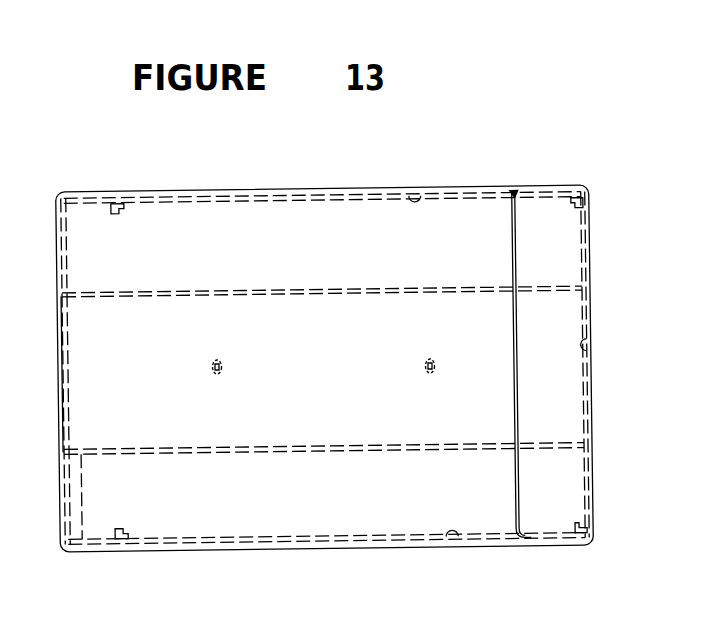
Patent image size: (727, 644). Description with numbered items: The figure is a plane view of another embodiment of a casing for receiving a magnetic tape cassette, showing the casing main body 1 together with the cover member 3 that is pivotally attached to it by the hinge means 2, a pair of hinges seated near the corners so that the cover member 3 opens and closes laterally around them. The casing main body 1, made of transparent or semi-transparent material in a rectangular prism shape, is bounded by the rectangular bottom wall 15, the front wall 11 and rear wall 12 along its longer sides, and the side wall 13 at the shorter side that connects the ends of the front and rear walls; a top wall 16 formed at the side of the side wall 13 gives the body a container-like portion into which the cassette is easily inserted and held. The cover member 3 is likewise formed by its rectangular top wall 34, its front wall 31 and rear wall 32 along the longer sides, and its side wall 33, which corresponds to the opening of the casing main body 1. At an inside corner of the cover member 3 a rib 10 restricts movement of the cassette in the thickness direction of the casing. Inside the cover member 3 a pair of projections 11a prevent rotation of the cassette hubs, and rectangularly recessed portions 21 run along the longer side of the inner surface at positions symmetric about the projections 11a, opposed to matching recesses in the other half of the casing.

The casing main body 1 is at (356, 368).
The hinge means 2 is at (582, 214).
The cover member 3 is at (381, 150).
The rib 10 is at (122, 212).
The front wall of the casing main body 11 is at (455, 534).
The projection 11a is at (215, 362).
The rear wall of the casing main body 12 is at (417, 204).
The side wall of the casing main body 13 is at (598, 350).
The bottom wall 15 is at (80, 408).
The top wall of the casing main body 16 is at (568, 418).
The rectangularly recessed portion 21 is at (296, 295).
The front wall of the cover member 31 is at (382, 548).
The rear wall of the cover member 32 is at (170, 191).
The side wall of the cover member 33 is at (59, 248).
The top wall of the cover member 34 is at (197, 515).